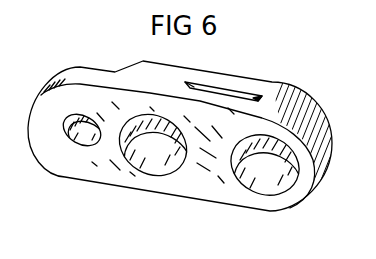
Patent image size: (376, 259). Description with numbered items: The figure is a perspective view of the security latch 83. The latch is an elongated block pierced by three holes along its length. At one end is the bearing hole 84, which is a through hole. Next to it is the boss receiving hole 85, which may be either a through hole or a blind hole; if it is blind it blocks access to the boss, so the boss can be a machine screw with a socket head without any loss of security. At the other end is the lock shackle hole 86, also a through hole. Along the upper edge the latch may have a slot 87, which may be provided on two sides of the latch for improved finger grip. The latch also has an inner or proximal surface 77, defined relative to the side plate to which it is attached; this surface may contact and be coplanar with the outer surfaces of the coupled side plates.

The inner or proximal surface 77 is at (183, 183).
The security latch 83 is at (303, 98).
The bearing hole 84 is at (256, 190).
The boss receiving hole 85 is at (144, 166).
The lock shackle hole 86 is at (78, 144).
The slot 87 is at (226, 88).